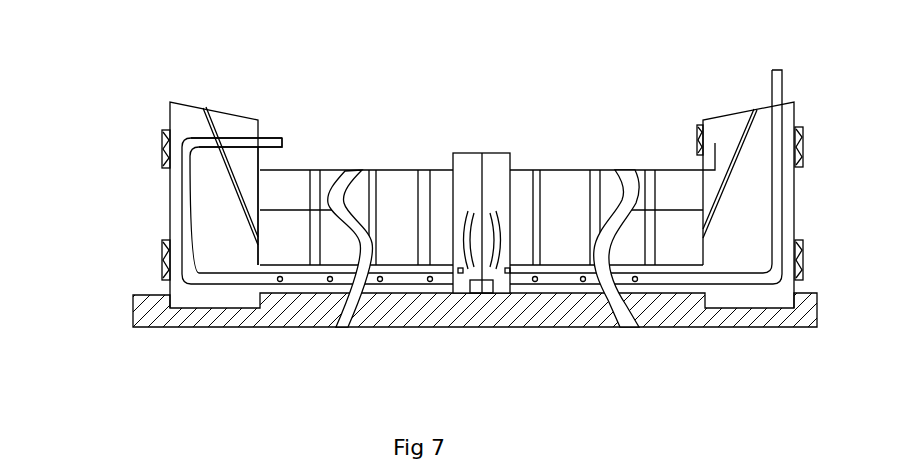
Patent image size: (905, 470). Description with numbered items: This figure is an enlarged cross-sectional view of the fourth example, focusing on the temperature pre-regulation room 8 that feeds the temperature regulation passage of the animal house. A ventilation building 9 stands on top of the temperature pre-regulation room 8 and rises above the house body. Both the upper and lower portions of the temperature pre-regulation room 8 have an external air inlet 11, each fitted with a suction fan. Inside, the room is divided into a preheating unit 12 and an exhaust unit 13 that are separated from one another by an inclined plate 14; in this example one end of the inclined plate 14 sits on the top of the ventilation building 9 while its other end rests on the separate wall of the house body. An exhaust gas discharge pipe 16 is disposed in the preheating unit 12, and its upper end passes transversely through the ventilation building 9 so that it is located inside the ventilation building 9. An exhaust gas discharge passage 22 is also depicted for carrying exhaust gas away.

The temperature pre-regulation room 8 is at (199, 171).
The ventilation building 9 is at (227, 123).
The external air inlet 11 is at (163, 260).
The preheating unit 12 is at (226, 249).
The exhaust unit 13 is at (238, 158).
The inclined plate 14 is at (237, 188).
The exhaust gas discharge pipe 16 is at (183, 223).
The exhaust gas discharge passage 22 is at (315, 279).